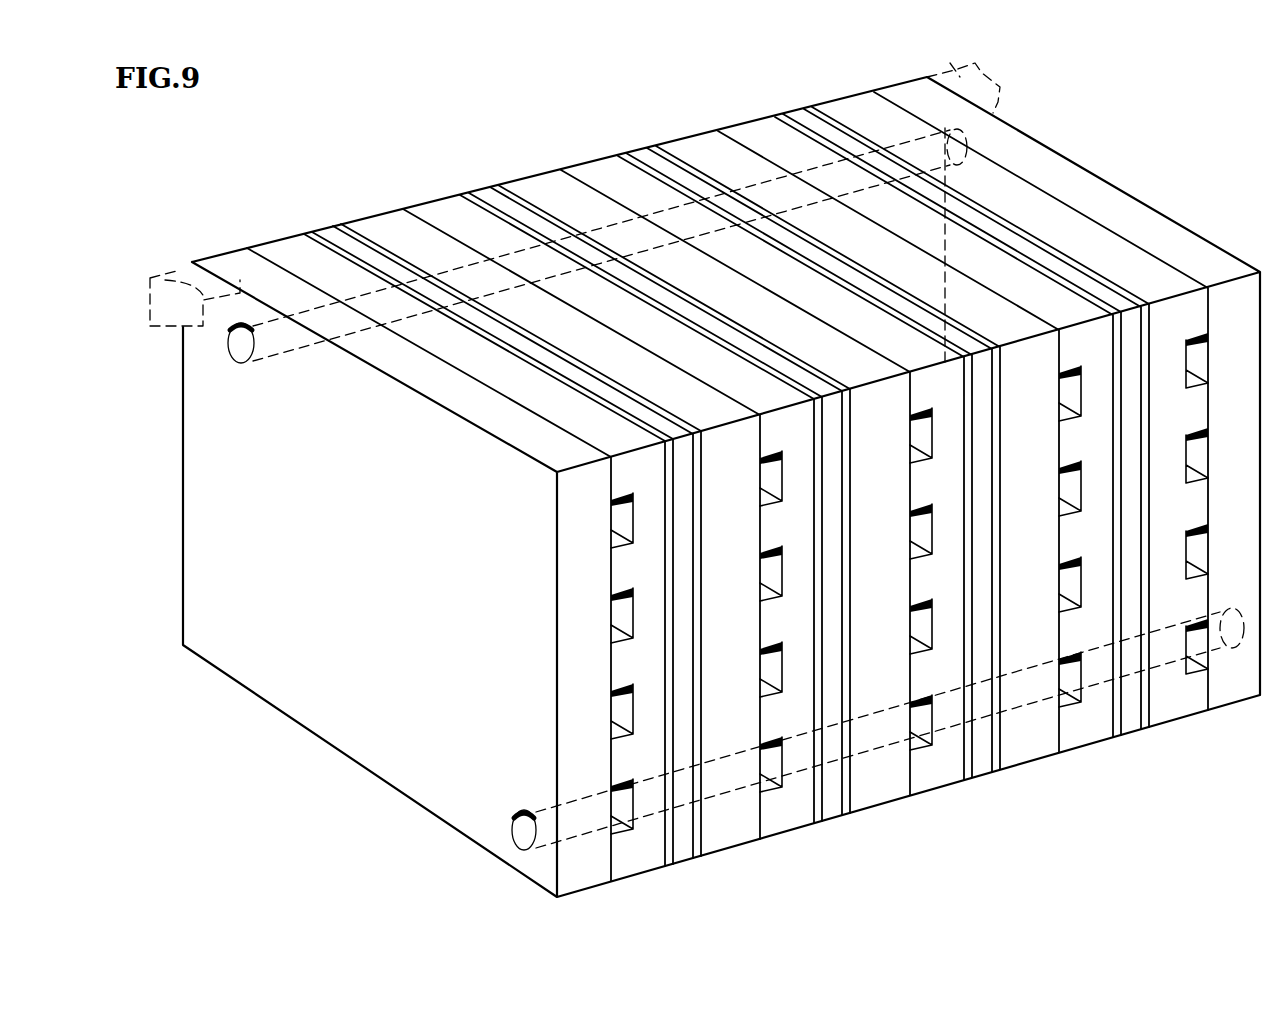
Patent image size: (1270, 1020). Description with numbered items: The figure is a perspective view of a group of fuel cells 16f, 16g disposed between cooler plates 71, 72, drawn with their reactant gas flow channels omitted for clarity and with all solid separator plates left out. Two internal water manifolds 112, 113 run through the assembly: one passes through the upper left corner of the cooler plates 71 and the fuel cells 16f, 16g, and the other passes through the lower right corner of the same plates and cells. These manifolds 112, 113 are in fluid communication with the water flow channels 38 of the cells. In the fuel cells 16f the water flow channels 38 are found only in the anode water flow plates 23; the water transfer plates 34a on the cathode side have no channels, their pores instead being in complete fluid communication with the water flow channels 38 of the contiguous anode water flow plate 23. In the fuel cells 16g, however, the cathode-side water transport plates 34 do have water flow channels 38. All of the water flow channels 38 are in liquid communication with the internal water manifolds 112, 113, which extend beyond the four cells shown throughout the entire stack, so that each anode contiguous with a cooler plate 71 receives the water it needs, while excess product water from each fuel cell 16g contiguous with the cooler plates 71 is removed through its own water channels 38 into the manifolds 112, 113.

The cooler plate 71 is at (903, 95).
The cooler plate 72 is at (240, 270).
The fuel cell 16f is at (953, 70).
The fuel cell 16g is at (177, 268).
The anode water flow plate 23 is at (632, 470).
The water transfer plate 34a is at (723, 458).
The water transport plate 34 is at (1173, 333).
The water flow channel 38 is at (620, 517).
The internal water manifold 112 is at (241, 346).
The internal water manifold 113 is at (522, 837).